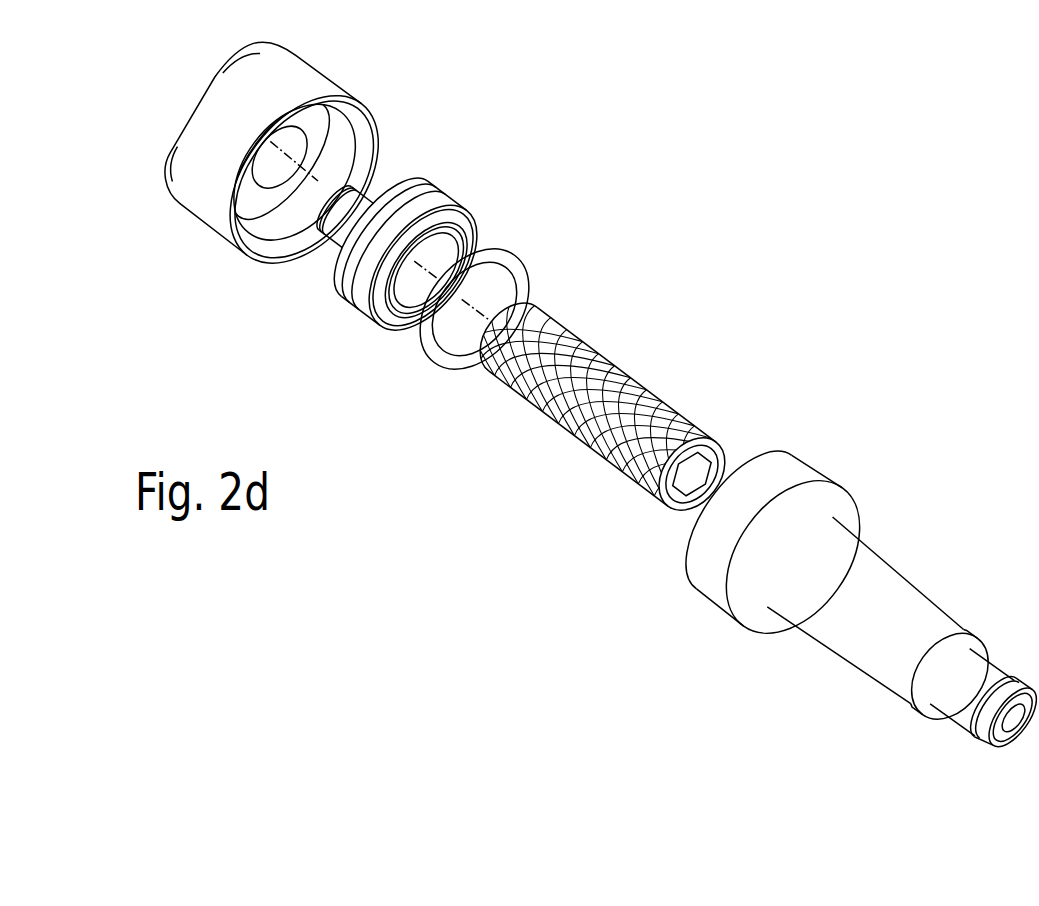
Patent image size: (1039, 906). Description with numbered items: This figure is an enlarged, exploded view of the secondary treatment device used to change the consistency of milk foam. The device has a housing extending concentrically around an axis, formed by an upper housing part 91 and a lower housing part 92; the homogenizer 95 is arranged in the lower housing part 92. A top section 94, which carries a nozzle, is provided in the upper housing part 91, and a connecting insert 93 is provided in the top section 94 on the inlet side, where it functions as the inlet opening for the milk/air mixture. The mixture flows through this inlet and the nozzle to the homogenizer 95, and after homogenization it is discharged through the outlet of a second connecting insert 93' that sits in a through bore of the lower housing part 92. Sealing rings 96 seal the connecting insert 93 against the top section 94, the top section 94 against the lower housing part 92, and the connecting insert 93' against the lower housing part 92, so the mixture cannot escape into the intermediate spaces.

The upper housing part 91 is at (340, 75).
The lower housing part 92 is at (850, 487).
The connecting insert 93 is at (296, 253).
The connecting insert 93' is at (975, 733).
The top section 94 is at (453, 183).
The homogenizer 95 is at (688, 412).
The sealing rings 96 is at (512, 248).